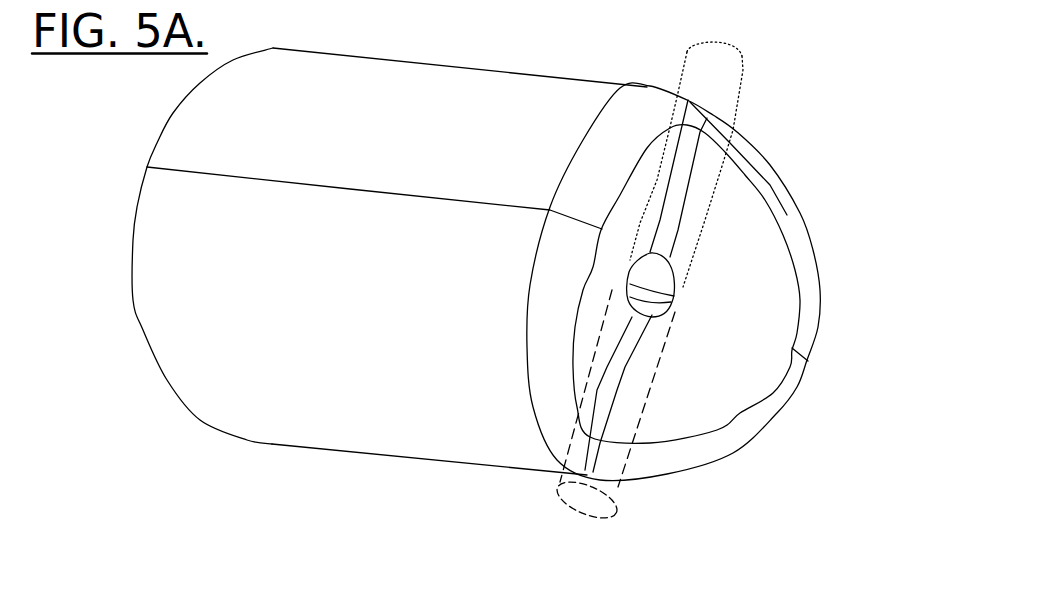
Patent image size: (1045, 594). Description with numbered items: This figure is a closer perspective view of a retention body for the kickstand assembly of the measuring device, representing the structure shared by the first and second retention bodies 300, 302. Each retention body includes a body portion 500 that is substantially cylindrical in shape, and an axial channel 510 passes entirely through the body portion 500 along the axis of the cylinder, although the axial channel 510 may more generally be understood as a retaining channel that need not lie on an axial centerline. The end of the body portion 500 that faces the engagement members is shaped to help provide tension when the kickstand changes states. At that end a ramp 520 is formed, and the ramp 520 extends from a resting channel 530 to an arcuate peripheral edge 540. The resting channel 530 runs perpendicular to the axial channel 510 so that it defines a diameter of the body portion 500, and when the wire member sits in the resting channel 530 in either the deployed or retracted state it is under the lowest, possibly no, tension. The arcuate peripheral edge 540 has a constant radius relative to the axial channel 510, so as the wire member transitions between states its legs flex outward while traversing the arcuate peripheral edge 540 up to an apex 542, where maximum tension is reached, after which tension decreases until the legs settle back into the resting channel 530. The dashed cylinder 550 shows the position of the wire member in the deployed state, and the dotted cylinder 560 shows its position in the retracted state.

The first retention body 300 is at (359, 278).
The second retention body 302 is at (359, 278).
The body portion 500 is at (546, 250).
The axial channel 510 is at (755, 222).
The ramp 520 is at (734, 172).
The resting channel 530 is at (700, 400).
The arcuate peripheral edge 540 is at (582, 294).
The apex 542 is at (600, 230).
The dashed cylinder 550 is at (639, 526).
The dotted cylinder 560 is at (737, 52).